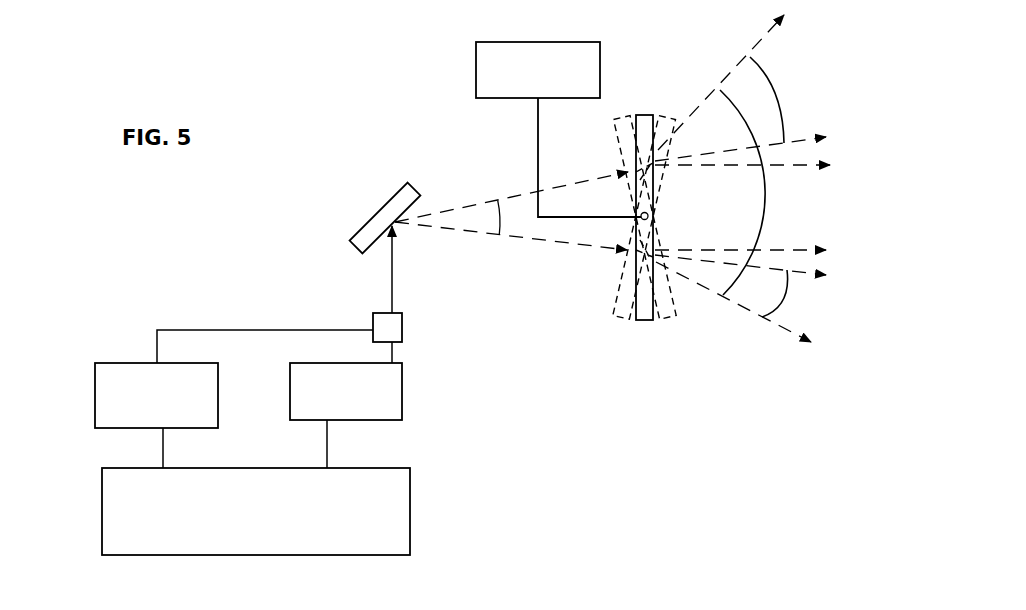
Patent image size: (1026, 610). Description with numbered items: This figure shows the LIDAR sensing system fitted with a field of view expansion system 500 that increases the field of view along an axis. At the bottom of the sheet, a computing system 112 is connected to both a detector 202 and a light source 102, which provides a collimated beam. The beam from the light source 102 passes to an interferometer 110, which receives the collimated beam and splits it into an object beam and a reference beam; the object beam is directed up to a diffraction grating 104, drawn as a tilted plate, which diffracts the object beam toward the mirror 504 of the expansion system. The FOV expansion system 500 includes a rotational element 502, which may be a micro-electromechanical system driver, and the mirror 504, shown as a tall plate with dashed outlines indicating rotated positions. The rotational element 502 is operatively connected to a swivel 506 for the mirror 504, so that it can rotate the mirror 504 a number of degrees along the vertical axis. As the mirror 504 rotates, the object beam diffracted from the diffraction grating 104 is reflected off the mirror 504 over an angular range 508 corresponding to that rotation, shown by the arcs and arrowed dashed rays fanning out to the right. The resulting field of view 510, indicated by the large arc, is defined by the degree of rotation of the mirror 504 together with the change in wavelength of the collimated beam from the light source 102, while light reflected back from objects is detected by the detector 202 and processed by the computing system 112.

The field of view expansion system 500 is at (330, 96).
The rotational element 502 is at (476, 68).
The mirror 504 is at (646, 114).
The swivel 506 is at (652, 216).
The angular range 508 is at (778, 92).
The field of view 510 is at (765, 194).
The diffraction grating 104 is at (375, 213).
The interferometer 110 is at (402, 326).
The light source 102 is at (402, 398).
The detector 202 is at (95, 400).
The computing system 112 is at (410, 518).